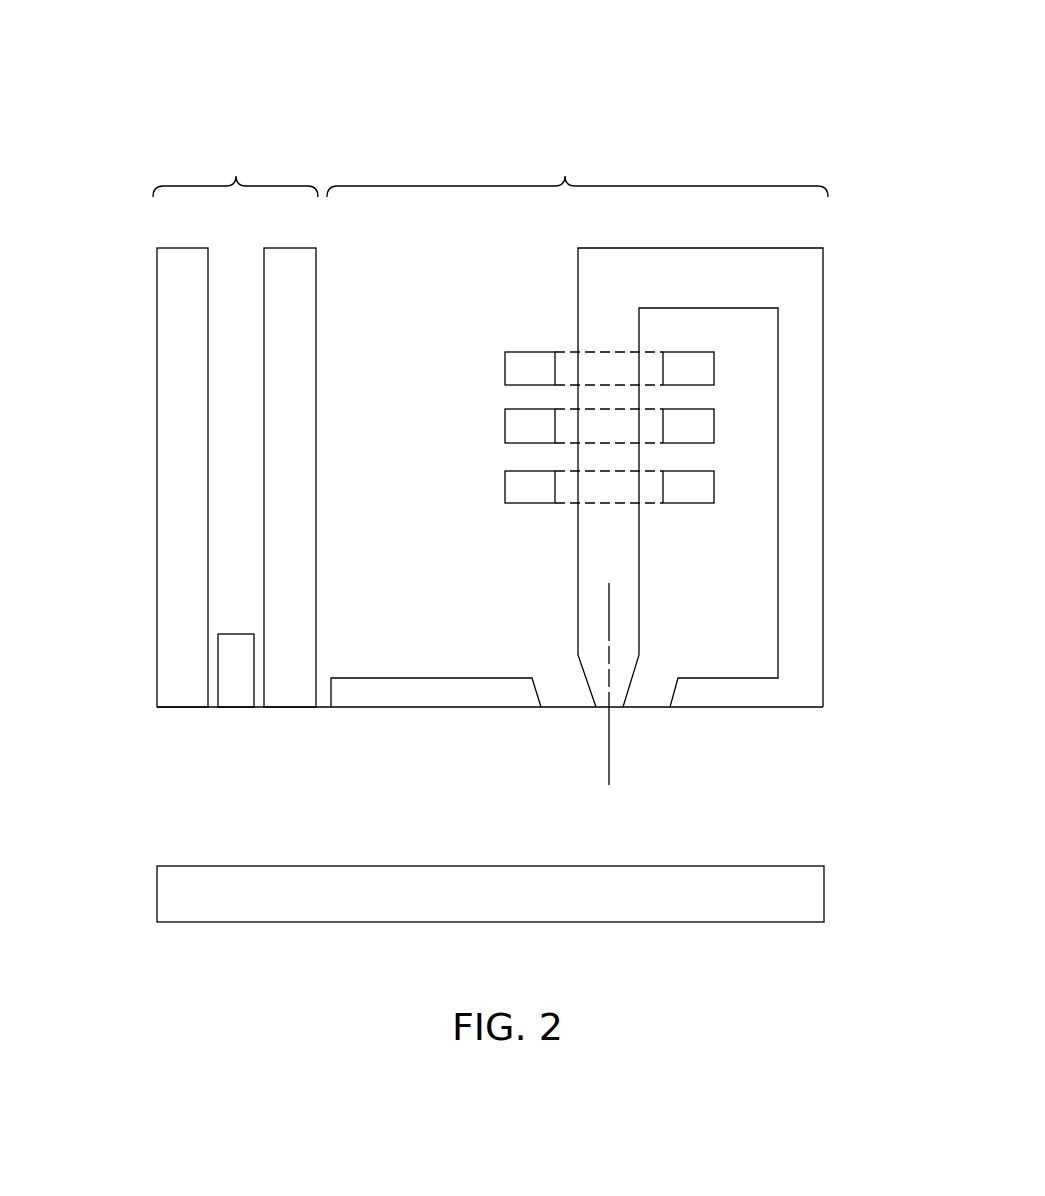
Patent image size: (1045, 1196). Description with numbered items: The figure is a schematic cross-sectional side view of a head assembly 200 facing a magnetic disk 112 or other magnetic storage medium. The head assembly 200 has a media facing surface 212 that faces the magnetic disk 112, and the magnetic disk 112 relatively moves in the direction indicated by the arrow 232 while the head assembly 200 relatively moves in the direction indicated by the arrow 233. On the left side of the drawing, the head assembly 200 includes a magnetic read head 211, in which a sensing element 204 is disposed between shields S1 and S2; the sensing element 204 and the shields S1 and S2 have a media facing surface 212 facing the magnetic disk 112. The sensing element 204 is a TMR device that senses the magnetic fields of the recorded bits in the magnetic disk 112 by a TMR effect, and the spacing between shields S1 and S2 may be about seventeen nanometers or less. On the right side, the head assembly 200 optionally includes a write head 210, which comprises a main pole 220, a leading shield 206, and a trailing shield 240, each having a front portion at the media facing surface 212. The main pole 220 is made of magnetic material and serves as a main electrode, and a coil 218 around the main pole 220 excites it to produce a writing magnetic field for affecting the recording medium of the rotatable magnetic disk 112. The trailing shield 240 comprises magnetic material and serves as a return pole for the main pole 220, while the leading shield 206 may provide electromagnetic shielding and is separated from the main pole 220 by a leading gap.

The head assembly 200 is at (187, 70).
The magnetic read head 211 is at (235, 167).
The write head 210 is at (577, 166).
The shield S1 is at (178, 697).
The shield S2 is at (286, 697).
The sensing element 204 is at (241, 705).
The media facing surface 212 is at (225, 708).
The leading shield 206 is at (376, 708).
The trailing shield 240 is at (790, 693).
The main pole 220 is at (625, 541).
The coil 218 is at (522, 504).
The arrow 233 is at (120, 403).
The arrow 232 is at (755, 845).
The magnetic disk 112 is at (824, 890).